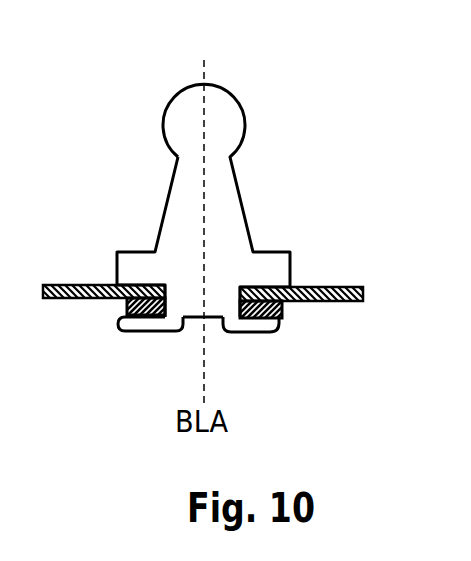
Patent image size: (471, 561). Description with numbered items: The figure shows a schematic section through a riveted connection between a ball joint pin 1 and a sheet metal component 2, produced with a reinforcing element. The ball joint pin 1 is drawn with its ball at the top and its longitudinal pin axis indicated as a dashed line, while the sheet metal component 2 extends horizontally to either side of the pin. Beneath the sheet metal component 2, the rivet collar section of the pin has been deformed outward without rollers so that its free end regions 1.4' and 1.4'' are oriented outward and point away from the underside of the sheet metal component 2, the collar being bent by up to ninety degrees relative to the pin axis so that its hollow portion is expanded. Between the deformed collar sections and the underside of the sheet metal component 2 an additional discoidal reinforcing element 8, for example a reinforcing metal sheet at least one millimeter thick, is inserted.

The ball joint pin 1 is at (242, 93).
The sheet metal component 2 is at (362, 277).
The discoidal reinforcing element 8 is at (277, 313).
The free end region of the rivet collar section 1.4' is at (110, 365).
The free end region of the rivet collar section 1.4'' is at (301, 368).